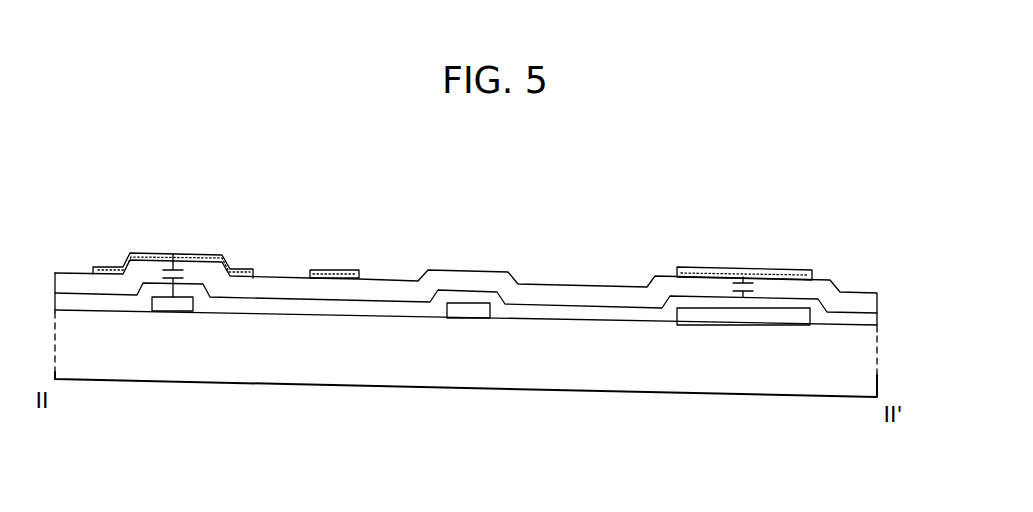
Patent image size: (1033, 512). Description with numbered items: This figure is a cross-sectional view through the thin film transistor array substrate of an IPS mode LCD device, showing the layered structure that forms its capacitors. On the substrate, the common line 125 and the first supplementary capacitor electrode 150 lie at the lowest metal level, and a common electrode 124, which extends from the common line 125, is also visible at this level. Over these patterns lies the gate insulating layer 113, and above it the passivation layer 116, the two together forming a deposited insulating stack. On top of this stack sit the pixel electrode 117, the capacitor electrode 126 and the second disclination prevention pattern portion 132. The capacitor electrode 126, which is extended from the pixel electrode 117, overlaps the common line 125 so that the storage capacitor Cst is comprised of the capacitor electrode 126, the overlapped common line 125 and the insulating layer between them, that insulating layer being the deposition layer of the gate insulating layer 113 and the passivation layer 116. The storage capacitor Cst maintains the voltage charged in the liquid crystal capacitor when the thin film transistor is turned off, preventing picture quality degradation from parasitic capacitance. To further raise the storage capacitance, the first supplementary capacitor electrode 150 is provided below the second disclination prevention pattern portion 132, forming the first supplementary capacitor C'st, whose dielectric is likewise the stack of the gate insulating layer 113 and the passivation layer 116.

The gate insulating layer 113 is at (872, 323).
The passivation layer 116 is at (868, 304).
The pixel electrode 117 is at (335, 270).
The common electrode 124 is at (468, 303).
The common line 125 is at (718, 318).
The capacitor electrode 126 is at (772, 267).
The second disclination prevention pattern portion 132 is at (178, 254).
The first supplementary capacitor electrode 150 is at (172, 311).
The storage capacitor Cst is at (731, 287).
The first supplementary capacitor C'st is at (229, 239).